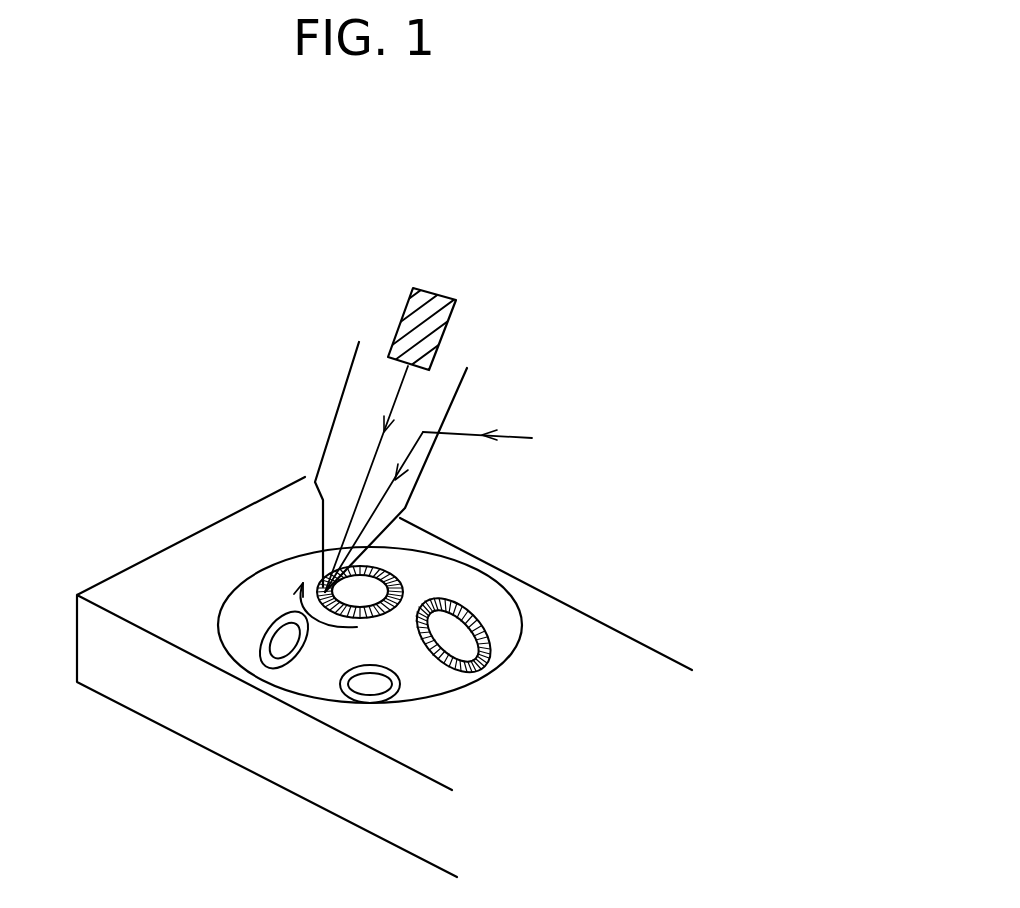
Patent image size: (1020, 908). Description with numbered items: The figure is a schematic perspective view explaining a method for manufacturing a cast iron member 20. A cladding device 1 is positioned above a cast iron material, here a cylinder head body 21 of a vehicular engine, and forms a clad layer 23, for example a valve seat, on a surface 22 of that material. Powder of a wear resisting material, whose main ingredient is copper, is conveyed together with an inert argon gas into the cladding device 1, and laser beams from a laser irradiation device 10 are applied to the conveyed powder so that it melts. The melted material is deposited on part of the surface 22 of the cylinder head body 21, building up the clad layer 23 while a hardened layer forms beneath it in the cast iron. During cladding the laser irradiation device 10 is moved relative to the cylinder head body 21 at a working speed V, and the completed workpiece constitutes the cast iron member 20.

The cladding device 1 is at (333, 388).
The laser irradiation device 10 is at (410, 308).
The cast iron member 20 is at (643, 628).
The cylinder head body 21 is at (183, 555).
The surface 22 is at (383, 571).
The clad layer 23 is at (393, 591).